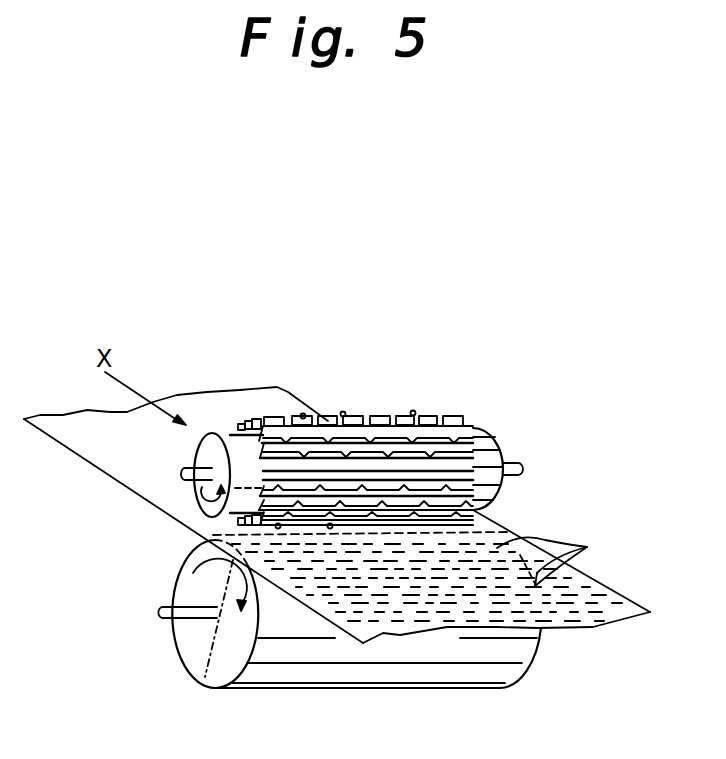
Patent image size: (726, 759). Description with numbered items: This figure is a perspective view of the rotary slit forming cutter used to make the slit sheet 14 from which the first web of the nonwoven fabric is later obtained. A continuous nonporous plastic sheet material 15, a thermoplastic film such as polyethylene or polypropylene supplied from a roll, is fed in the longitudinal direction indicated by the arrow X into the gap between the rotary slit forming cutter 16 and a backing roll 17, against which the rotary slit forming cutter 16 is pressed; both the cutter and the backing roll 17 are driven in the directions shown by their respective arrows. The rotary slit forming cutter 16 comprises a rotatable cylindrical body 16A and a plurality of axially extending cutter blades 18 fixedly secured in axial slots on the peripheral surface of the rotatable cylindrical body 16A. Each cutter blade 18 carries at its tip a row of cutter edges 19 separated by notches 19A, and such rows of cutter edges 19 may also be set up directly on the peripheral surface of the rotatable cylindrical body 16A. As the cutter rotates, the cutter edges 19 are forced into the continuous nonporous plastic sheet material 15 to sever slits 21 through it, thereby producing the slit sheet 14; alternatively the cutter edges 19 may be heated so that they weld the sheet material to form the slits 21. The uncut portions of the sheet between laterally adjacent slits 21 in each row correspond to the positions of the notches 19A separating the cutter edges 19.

The slit sheet 14 is at (347, 622).
The continuous nonporous plastic sheet material 15 is at (127, 457).
The rotary slit forming cutter 16 is at (181, 497).
The rotatable cylindrical body 16A is at (210, 432).
The backing roll 17 is at (185, 582).
The cutter blade 18 is at (495, 430).
The cutter edges 19 is at (325, 417).
The notches 19A is at (303, 417).
The slits 21 is at (587, 547).